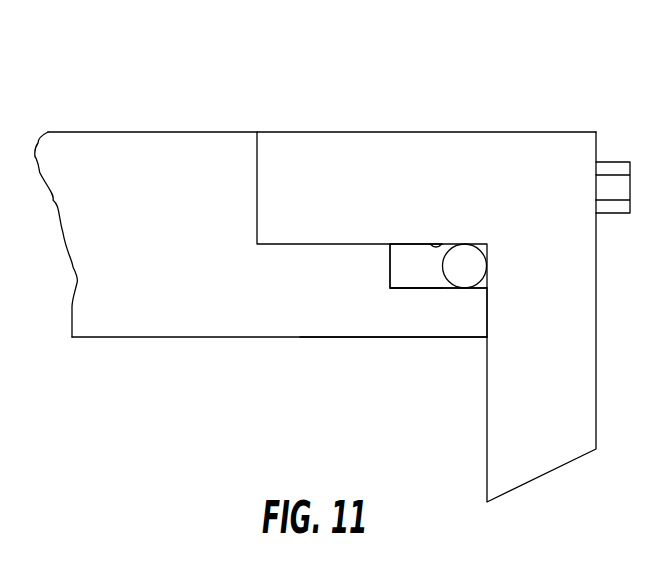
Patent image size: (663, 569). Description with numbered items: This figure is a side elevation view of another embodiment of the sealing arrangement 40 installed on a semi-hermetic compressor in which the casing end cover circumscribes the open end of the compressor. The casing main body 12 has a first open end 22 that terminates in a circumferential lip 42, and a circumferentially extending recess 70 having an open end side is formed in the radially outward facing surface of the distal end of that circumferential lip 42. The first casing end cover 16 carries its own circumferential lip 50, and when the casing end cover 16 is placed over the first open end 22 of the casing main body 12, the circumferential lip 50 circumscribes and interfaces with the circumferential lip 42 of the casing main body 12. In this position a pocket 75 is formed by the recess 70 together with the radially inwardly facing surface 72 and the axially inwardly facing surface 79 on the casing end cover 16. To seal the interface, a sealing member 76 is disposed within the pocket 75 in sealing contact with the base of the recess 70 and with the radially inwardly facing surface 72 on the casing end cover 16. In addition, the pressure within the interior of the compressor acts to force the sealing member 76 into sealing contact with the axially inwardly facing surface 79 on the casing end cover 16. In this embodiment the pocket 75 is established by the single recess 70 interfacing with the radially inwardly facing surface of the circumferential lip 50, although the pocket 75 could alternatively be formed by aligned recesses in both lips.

The casing main body 12 is at (187, 132).
The circumferential lip 50 is at (450, 132).
The first open end 22 is at (192, 393).
The circumferential lip 42 is at (388, 337).
The first casing end cover 16 is at (630, 302).
The sealing arrangement 40 is at (510, 170).
The pocket 75 is at (407, 250).
The radially inwardly facing surface 72 is at (435, 250).
The sealing member 76 is at (530, 243).
The axially inwardly facing surface 79 is at (512, 317).
The recess 70 is at (405, 302).